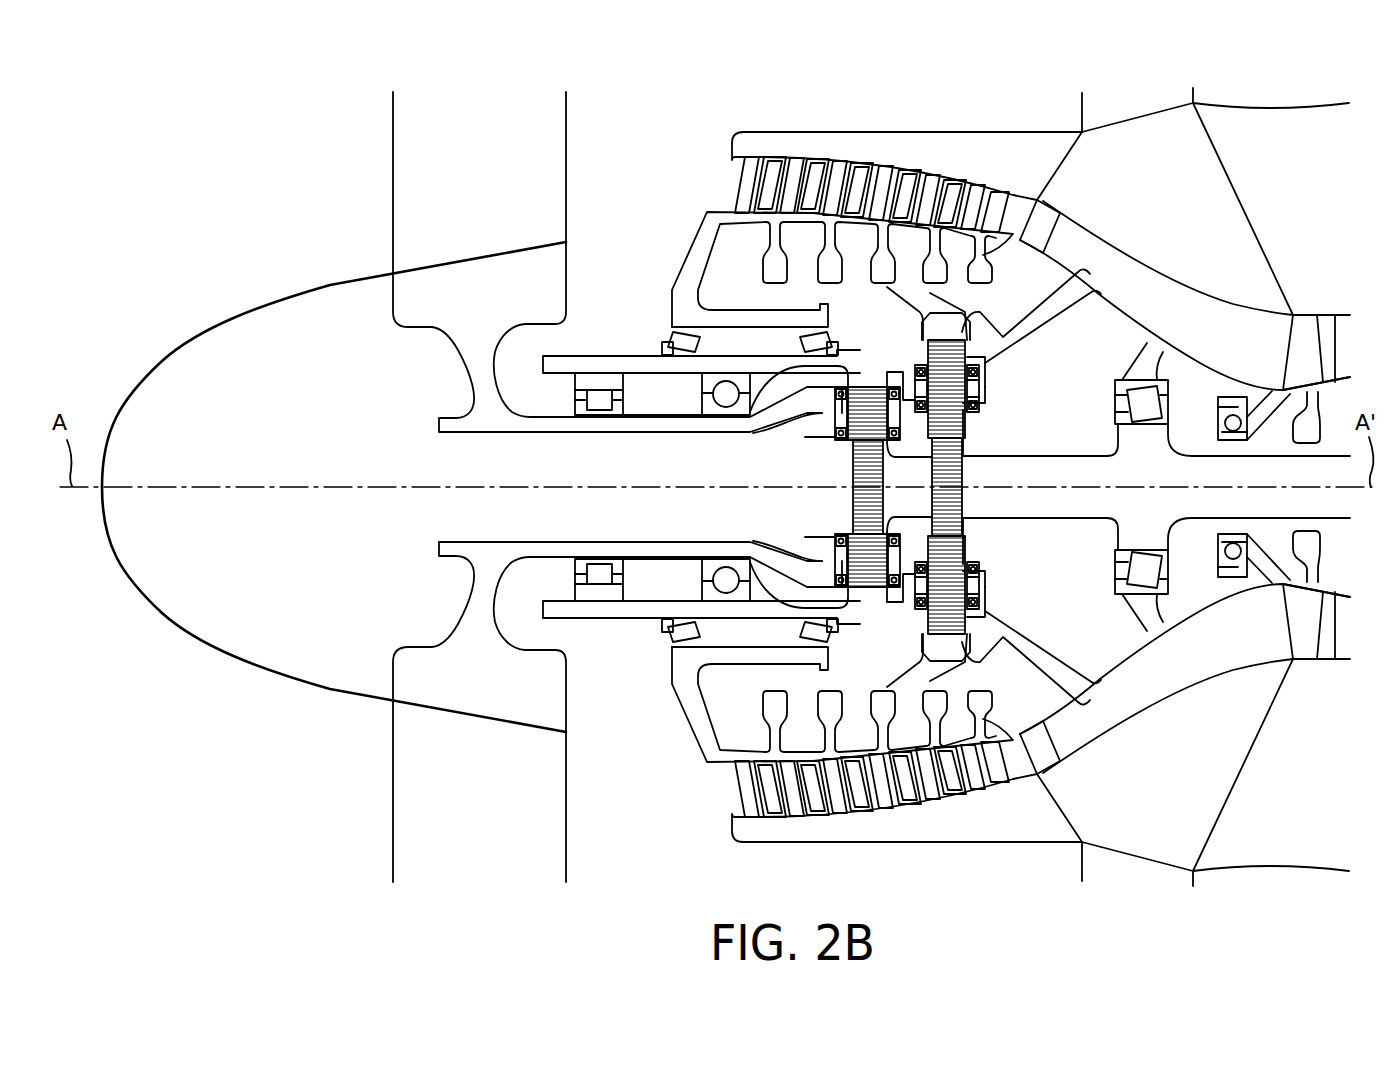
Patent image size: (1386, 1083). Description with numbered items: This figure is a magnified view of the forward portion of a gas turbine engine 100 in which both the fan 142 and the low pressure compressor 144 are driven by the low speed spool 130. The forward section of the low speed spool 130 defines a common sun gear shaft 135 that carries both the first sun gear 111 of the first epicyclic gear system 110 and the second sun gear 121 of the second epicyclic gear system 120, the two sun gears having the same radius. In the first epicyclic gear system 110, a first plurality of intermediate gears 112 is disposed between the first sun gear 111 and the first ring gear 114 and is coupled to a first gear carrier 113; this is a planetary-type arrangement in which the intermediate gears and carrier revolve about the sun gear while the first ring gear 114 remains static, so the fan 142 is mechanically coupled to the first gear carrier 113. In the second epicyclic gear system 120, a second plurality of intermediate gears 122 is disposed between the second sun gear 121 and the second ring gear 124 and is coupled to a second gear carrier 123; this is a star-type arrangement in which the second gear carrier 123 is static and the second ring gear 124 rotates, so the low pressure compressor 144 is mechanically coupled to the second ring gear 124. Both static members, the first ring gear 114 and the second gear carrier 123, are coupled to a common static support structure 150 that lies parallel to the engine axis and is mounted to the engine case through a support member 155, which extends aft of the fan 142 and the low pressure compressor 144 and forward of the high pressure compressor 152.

The gas turbine engine 100 is at (160, 212).
The fan 142 is at (415, 193).
The low pressure compressor 144 is at (708, 176).
The high pressure compressor 152 is at (1323, 305).
The common static support structure 150 is at (612, 365).
The support member 155 is at (1053, 311).
The first epicyclic gear system 110 is at (723, 472).
The first sun gear 111 is at (858, 512).
The first plurality of intermediate gears 112 is at (860, 433).
The first gear carrier 113 is at (832, 392).
The first ring gear 114 is at (750, 417).
The second epicyclic gear system 120 is at (1038, 408).
The second sun gear 121 is at (953, 477).
The second plurality of intermediate gears 122 is at (953, 367).
The second gear carrier 123 is at (975, 392).
The second ring gear 124 is at (1017, 337).
The low speed spool 130 is at (1095, 525).
The common sun gear shaft 135 is at (965, 540).